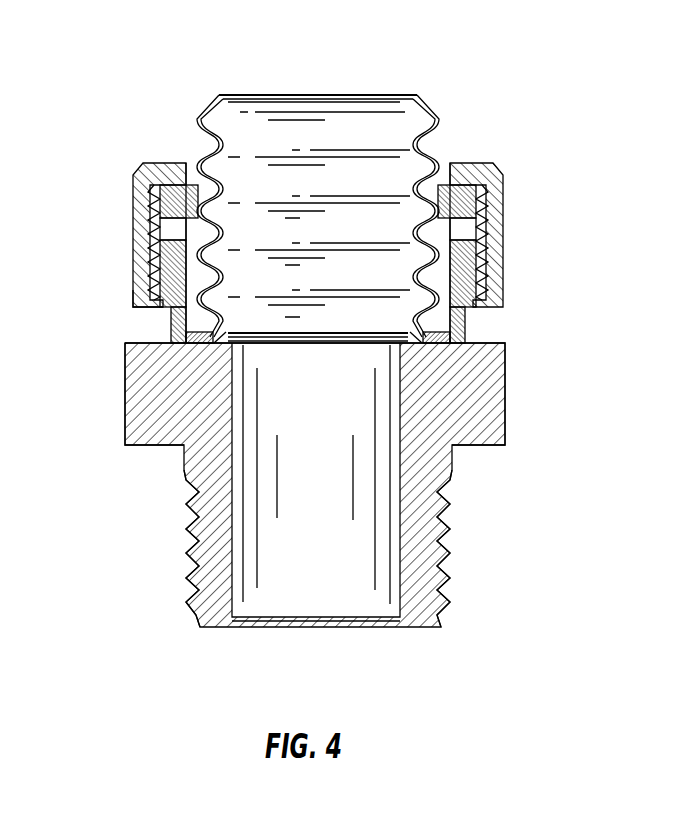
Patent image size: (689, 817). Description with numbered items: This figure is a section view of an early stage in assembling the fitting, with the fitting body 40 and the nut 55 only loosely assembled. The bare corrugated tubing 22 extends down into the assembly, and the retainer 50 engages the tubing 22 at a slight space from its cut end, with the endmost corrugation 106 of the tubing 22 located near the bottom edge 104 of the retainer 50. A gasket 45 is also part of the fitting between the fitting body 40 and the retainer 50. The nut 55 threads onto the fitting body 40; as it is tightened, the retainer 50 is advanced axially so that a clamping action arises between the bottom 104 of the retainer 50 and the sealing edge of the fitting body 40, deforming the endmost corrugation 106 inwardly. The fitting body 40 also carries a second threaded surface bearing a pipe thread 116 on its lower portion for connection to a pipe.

The tubing 22 is at (423, 103).
The nut 55 is at (270, 248).
The retainer 50 is at (132, 305).
The bottom edge of the retainer 104 is at (365, 253).
The endmost corrugation 106 is at (440, 318).
The gasket 45 is at (183, 349).
The fitting body 40 is at (277, 509).
The pipe thread 116 is at (203, 585).